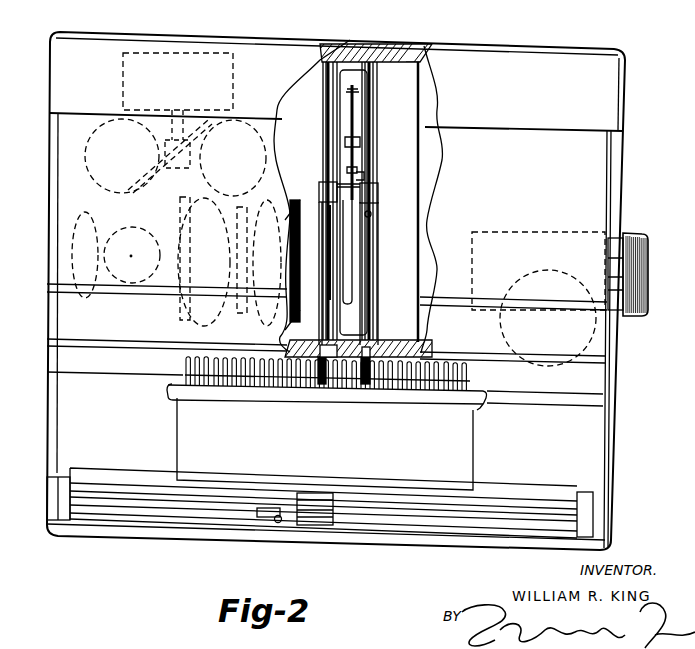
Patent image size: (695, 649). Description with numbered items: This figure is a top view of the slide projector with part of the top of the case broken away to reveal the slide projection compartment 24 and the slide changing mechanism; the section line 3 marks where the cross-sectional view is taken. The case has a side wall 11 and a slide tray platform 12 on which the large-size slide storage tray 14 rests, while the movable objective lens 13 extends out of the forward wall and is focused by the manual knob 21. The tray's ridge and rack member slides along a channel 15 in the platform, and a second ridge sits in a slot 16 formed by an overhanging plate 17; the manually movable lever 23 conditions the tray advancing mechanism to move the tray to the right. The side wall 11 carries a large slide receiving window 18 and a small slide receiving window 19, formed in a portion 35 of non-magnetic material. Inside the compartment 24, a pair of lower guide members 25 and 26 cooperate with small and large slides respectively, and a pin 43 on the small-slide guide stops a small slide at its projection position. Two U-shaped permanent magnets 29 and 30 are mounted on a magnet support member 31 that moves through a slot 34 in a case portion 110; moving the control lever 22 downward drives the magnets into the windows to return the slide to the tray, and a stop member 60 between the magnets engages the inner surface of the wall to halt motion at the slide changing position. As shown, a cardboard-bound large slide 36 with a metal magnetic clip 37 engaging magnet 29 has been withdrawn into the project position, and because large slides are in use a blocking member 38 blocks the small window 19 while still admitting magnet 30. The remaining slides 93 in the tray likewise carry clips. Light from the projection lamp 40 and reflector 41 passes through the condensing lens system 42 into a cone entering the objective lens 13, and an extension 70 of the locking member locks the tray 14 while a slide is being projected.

The section line 3 is at (173, 0).
The side wall 11 is at (85, 346).
The slide tray platform 12 is at (119, 441).
The objective lens 13 is at (648, 272).
The slide storage tray 14 is at (354, 461).
The channel 15 is at (593, 402).
The slot 16 is at (583, 494).
The overhanging plate 17 is at (497, 489).
The large slide receiving window 18 is at (322, 342).
The small slide receiving window 19 is at (363, 340).
The manual knob 21 is at (560, 363).
The control lever 22 is at (331, 528).
The manually movable lever 23 is at (280, 524).
The slide projection compartment 24 is at (402, 106).
The lower guide member 25 is at (376, 282).
The lower guide member 26 is at (324, 103).
The permanent magnet 29 is at (320, 186).
The permanent magnet 30 is at (379, 194).
The magnet support member 31 is at (352, 118).
The slot 34 is at (352, 233).
The non-magnetic side wall portion 35 is at (397, 343).
The large slide 36 is at (328, 292).
The metal magnetic clip 37 is at (300, 220).
The blocking member 38 is at (370, 372).
The projection lamp 40 is at (141, 228).
The reflector 41 is at (95, 217).
The condensing lens system 42 is at (223, 311).
The pin 43 is at (372, 214).
The stop member 60 is at (362, 177).
The extension of locking member 70 is at (324, 386).
The slides 93 is at (183, 358).
The case portion 110 is at (298, 96).